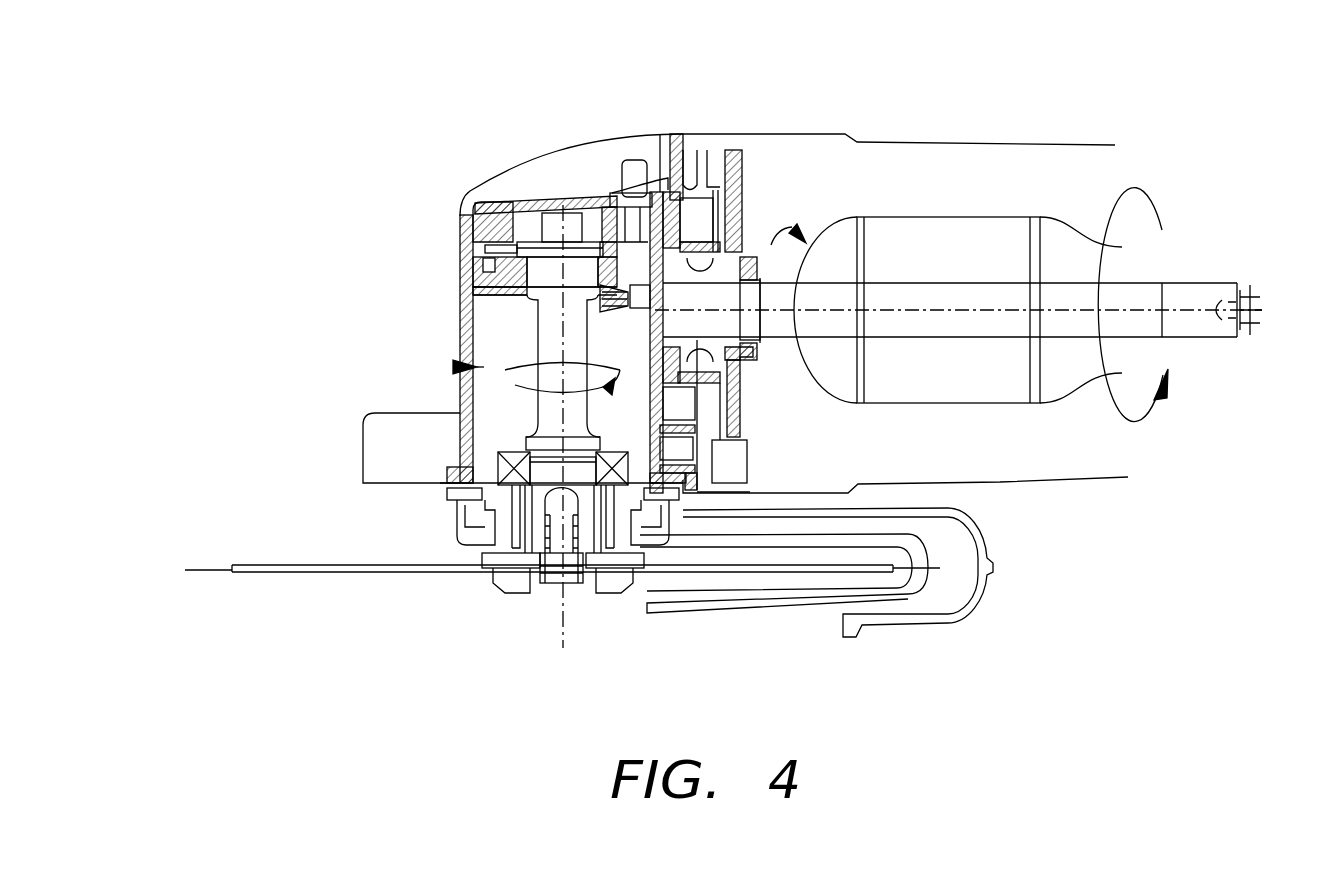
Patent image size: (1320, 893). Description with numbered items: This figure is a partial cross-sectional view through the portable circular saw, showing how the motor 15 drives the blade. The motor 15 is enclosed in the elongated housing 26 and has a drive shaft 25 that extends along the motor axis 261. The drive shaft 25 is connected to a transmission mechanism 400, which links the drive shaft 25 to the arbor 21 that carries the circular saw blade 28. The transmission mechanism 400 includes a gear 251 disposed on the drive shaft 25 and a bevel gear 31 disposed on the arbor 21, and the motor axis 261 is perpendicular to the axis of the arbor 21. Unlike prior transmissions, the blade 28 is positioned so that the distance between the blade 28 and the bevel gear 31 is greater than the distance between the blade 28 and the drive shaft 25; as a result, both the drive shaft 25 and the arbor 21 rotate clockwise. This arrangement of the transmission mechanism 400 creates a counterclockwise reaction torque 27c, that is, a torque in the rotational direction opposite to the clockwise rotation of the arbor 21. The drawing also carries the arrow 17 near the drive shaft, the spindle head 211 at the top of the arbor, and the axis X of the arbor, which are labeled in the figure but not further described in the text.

The motor 15 is at (960, 165).
The rotation direction arrow of motor shaft 17 is at (807, 383).
The arbor 21 is at (550, 417).
The spindle head with bevel gear 211 is at (543, 270).
The drive shaft 25 is at (743, 372).
The gear 251 is at (480, 308).
The housing 26 is at (877, 140).
The motor axis 261 is at (1193, 307).
The counterclockwise reaction torque 27c is at (1147, 197).
The circular saw blade 28 is at (300, 563).
The bevel gear 31 is at (478, 278).
The transmission mechanism 400 is at (455, 367).
The spindle axis X is at (517, 363).